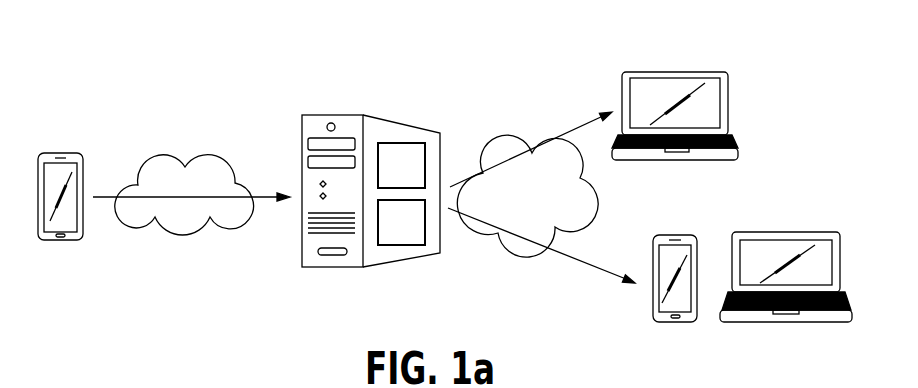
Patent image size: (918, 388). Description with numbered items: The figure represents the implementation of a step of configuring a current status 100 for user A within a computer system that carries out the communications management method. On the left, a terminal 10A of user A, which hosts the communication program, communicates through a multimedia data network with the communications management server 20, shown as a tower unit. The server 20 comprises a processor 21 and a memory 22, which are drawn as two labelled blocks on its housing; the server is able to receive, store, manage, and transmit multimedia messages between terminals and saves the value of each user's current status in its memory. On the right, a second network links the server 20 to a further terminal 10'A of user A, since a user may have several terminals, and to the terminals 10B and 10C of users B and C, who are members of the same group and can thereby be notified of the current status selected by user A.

The step of configuring a current status 100 is at (221, 315).
The terminal 10A is at (56, 240).
The communications management server 20 is at (370, 220).
The processor 21 is at (401, 165).
The memory 22 is at (401, 222).
The terminal 10'A is at (675, 89).
The terminal 10B is at (670, 322).
The terminal 10C is at (790, 322).